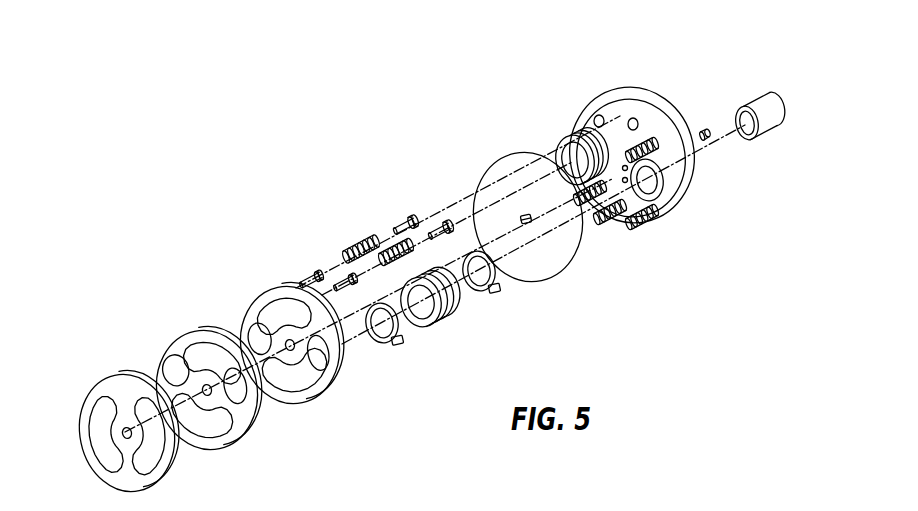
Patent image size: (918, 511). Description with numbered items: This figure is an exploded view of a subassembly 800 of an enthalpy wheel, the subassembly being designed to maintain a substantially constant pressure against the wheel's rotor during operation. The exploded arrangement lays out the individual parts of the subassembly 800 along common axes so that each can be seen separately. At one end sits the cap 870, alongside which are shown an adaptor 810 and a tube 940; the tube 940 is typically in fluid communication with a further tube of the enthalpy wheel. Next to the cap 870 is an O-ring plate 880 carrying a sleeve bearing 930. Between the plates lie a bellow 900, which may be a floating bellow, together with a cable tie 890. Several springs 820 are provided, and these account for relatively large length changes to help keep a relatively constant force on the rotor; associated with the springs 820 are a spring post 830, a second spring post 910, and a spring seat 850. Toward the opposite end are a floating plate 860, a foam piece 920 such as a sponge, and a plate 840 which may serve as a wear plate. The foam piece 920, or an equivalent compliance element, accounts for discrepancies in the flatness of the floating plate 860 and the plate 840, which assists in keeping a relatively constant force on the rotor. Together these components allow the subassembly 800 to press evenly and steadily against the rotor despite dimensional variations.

The subassembly 800 is at (414, 114).
The adaptor 810 is at (706, 129).
The springs 820 is at (387, 242).
The spring post 830 is at (300, 272).
The plate 840 is at (103, 377).
The spring seat 850 is at (407, 217).
The floating plate 860 is at (323, 393).
The cap 870 is at (670, 226).
The O-ring plate 880 is at (567, 275).
The cable tie 890 is at (396, 349).
The bellow 900 is at (443, 320).
The spring post 910 is at (340, 278).
The foam piece 920 is at (243, 443).
The sleeve bearing 930 is at (522, 214).
The tube 940 is at (770, 133).